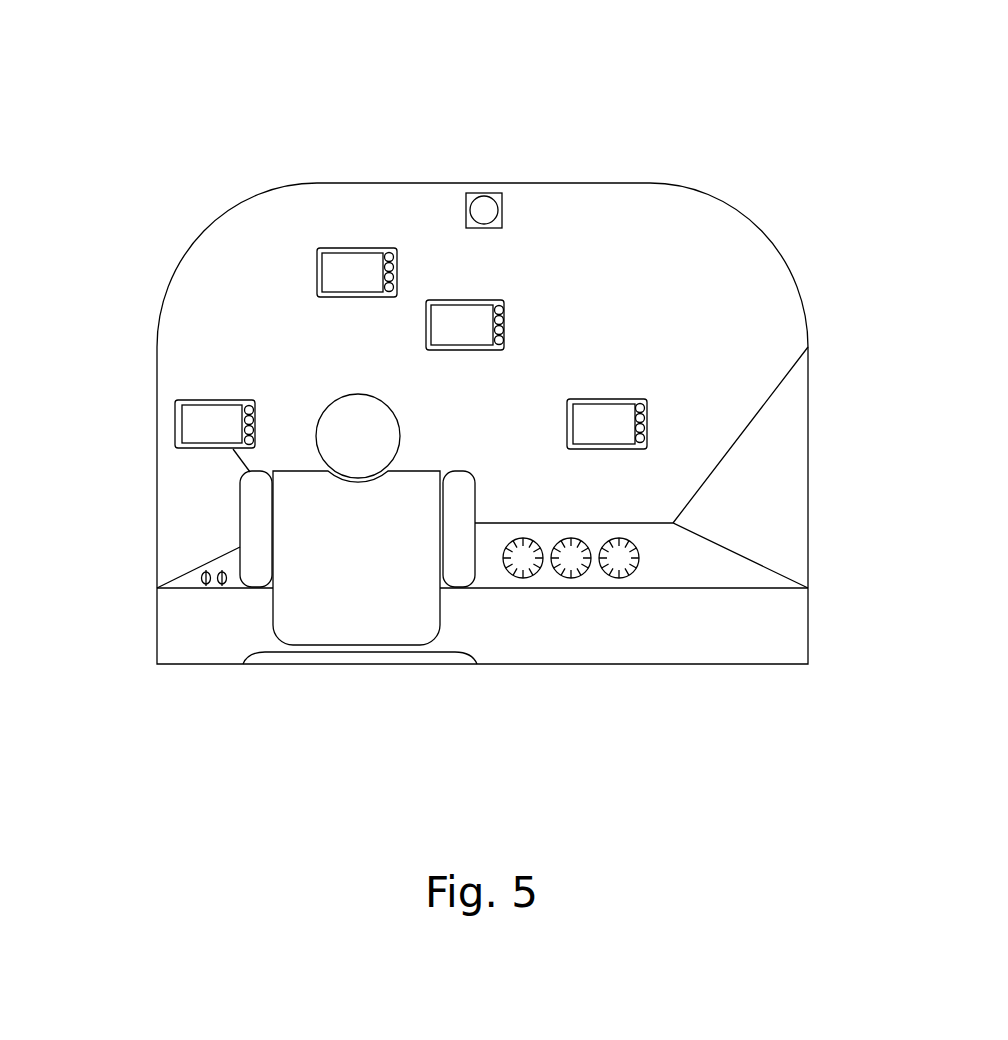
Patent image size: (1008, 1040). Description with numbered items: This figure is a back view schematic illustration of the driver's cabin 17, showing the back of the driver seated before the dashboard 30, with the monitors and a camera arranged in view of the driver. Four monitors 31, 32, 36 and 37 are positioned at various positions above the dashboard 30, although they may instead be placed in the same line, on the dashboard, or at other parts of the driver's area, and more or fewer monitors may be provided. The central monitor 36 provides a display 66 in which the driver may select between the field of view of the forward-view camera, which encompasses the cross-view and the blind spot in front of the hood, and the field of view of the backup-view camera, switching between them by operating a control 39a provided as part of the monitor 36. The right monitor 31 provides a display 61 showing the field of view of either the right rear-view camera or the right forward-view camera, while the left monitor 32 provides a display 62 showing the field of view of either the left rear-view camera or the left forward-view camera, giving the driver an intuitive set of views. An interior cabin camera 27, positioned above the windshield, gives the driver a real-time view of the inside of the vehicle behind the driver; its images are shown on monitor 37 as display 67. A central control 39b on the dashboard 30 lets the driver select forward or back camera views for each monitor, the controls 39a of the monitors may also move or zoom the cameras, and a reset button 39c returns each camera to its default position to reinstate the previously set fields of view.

The driver's cabin 17 is at (580, 684).
The interior cabin camera 27 is at (484, 193).
The dashboard 30 is at (700, 567).
The right monitor 31 is at (607, 422).
The left monitor 32 is at (199, 400).
The central monitor 36 is at (467, 325).
The monitor 37 is at (343, 257).
The control 39a is at (395, 297).
The central control 39b is at (206, 585).
The reset button 39c is at (222, 585).
The display 61 is at (619, 432).
The display 62 is at (213, 418).
The display 66 is at (468, 332).
The display 67 is at (367, 270).